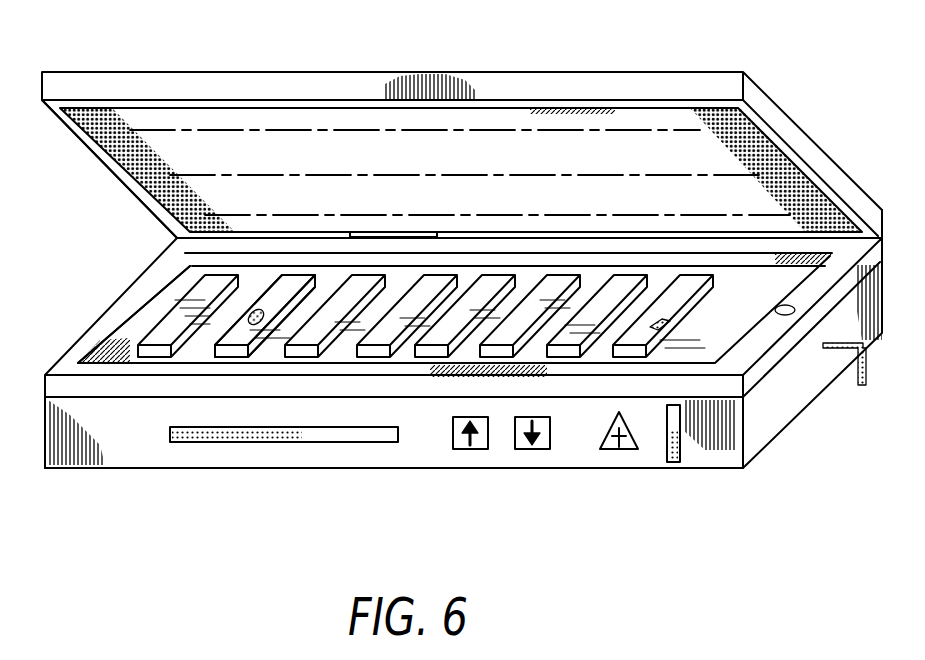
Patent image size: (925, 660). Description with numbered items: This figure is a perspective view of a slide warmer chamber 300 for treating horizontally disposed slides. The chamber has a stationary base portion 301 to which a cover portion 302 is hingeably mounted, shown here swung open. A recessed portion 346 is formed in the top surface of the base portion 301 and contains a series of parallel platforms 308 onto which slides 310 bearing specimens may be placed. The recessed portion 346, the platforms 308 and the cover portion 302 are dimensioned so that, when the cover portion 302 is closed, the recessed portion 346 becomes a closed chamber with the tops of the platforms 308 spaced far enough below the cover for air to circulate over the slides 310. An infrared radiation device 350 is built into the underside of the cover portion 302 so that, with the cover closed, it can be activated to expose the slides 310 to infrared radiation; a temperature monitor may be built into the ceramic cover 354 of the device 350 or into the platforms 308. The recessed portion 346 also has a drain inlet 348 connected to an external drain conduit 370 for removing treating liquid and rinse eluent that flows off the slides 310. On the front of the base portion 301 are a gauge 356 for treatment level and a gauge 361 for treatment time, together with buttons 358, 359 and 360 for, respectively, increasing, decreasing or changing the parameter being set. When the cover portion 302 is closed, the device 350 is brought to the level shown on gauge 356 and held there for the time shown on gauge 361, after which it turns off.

The slide warmer chamber 300 is at (46, 378).
The stationary base portion 301 is at (83, 433).
The cover portion 302 is at (130, 88).
The platforms 308 is at (173, 325).
The slides 310 is at (235, 338).
The recessed portion 346 is at (130, 346).
The drain inlet 348 is at (785, 305).
The infrared radiation device 350 is at (97, 149).
The ceramic cover 354 is at (140, 193).
The gauge for treatment level 356 is at (272, 445).
The button for increasing 358 is at (462, 449).
The button for decreasing 359 is at (525, 449).
The button for changing the parameter 360 is at (610, 449).
The gauge for treatment time 361 is at (680, 452).
The external drain conduit 370 is at (865, 385).